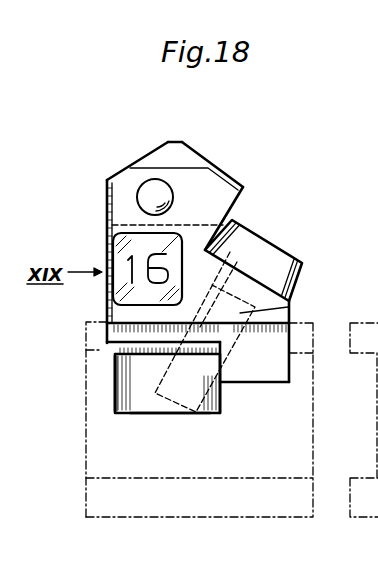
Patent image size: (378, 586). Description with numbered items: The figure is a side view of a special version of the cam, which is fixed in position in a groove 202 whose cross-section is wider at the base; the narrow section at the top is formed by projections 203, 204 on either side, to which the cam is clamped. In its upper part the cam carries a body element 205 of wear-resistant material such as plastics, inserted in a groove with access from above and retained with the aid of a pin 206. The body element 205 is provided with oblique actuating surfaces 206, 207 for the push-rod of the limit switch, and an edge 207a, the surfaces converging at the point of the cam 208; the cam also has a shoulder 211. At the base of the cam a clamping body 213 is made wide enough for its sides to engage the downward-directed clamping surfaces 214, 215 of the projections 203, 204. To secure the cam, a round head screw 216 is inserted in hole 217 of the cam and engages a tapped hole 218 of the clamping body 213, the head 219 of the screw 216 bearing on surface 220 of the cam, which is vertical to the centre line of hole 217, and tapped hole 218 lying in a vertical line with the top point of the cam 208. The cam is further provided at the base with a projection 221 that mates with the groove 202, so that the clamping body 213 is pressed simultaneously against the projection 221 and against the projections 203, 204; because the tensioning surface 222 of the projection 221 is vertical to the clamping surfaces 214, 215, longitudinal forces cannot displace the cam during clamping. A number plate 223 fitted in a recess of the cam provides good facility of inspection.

The groove 202 is at (212, 467).
The projection 203 is at (93, 338).
The projection 204 is at (93, 338).
The body element 205 is at (180, 161).
The oblique actuating surface / pin 206 is at (172, 200).
The oblique actuating surface 207 is at (140, 158).
The right inclined edge 207a is at (205, 158).
The point of the cam 208 is at (176, 140).
The shoulder surface 211 is at (106, 322).
The clamping body 213 is at (133, 405).
The clamping surface 214 is at (100, 350).
The clamping surface 215 is at (108, 430).
The round head screw 216 is at (291, 309).
The hole 217 is at (229, 256).
The tapped hole 218 is at (168, 412).
The head 219 is at (257, 248).
The surface 220 is at (292, 299).
The projection 221 is at (273, 372).
The tensioning surface 222 is at (222, 367).
The number plate 223 is at (115, 243).